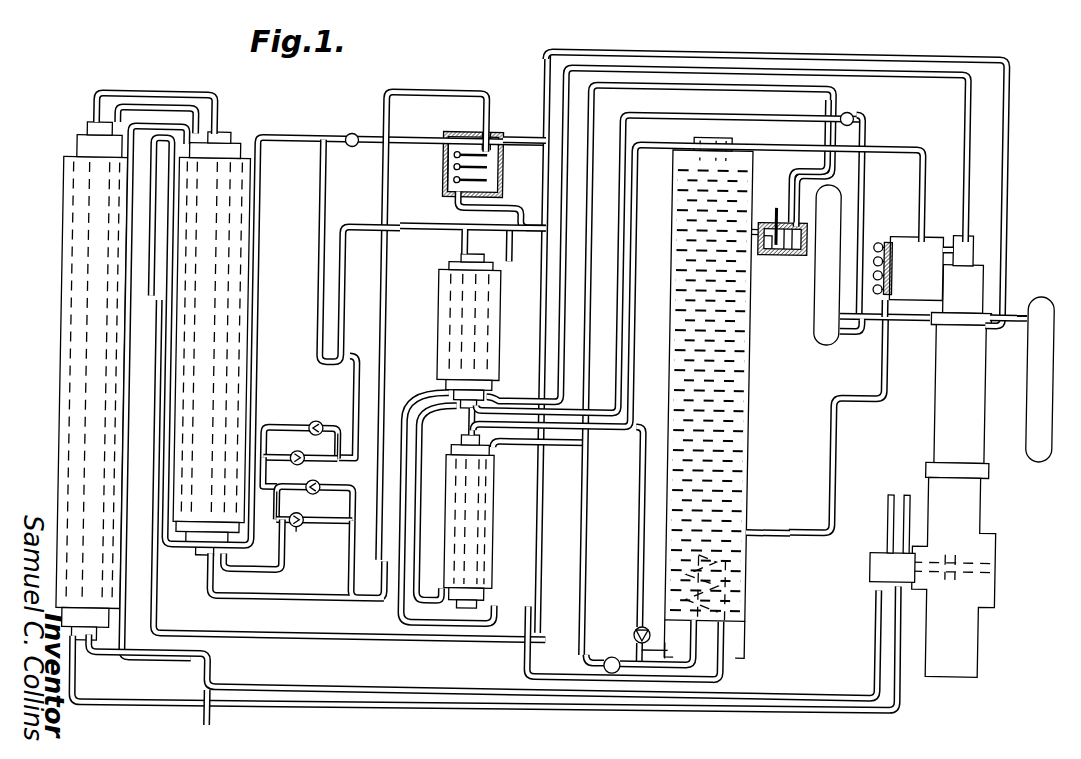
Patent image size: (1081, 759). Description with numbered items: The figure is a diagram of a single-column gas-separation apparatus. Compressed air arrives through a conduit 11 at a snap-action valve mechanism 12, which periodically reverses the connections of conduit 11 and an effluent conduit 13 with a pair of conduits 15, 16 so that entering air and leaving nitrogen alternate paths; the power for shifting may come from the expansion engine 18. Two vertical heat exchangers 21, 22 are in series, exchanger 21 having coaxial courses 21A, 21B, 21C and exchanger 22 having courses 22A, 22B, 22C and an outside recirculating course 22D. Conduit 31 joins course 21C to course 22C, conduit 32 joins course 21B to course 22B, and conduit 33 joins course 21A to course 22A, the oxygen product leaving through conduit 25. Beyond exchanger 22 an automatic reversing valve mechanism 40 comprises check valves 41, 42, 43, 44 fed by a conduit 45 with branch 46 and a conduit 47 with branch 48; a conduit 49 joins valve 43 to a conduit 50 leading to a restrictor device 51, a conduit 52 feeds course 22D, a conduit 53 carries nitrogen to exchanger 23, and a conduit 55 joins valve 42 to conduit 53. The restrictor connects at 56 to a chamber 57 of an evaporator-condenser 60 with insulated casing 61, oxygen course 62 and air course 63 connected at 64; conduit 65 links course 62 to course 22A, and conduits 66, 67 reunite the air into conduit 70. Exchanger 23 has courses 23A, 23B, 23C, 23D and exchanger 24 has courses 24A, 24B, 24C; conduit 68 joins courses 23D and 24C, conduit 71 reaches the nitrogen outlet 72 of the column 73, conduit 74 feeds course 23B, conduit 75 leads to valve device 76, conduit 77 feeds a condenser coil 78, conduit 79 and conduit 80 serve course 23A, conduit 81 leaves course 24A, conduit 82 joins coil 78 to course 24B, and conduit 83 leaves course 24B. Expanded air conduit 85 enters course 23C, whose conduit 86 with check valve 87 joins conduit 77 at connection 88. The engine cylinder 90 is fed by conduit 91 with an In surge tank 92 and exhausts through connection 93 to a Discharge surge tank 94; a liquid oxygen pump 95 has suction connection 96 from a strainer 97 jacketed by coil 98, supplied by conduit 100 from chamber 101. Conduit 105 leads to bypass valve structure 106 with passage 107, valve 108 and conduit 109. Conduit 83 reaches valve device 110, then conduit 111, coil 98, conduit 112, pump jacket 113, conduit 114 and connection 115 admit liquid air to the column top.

The conduit 11 is at (886, 508).
The valve mechanism 12 is at (861, 574).
The conduit 13 is at (904, 530).
The conduit 15 is at (875, 627).
The conduit 16 is at (897, 708).
The expansion engine 18 is at (984, 501).
The heat exchanger 21 is at (55, 366).
The course 21A is at (80, 223).
The course 21B is at (75, 253).
The course 21C is at (66, 288).
The heat exchanger 22 is at (252, 330).
The course 22A is at (252, 173).
The course 22B is at (252, 203).
The course 22C is at (252, 233).
The fourth course 22D is at (252, 262).
The heat exchanger 23 is at (431, 324).
The central course 23A is at (500, 278).
The course 23B is at (500, 296).
The course 23C is at (500, 312).
The outer course 23D is at (500, 330).
The heat exchanger 24 is at (494, 472).
The central course 24A is at (480, 490).
The intermediate course 24B is at (482, 518).
The outer course 24C is at (480, 548).
The conduit 25 is at (213, 715).
The conduit 31 is at (134, 124).
The conduit 32 is at (158, 105).
The conduit 33 is at (130, 92).
The automatic reversing valve mechanism 40 is at (309, 525).
The check valve 41 is at (297, 528).
The check valve 42 is at (350, 494).
The check valve 43 is at (313, 480).
The check valve 44 is at (315, 421).
The conduit 45 is at (283, 572).
The branch 46 is at (280, 500).
The conduit 47 is at (266, 470).
The branch 48 is at (293, 453).
The conduit 49 is at (335, 445).
The conduit 50 is at (360, 410).
The restrictor device 51 is at (352, 133).
The conduit 52 is at (300, 137).
The conduit 53 is at (346, 306).
The conduit 55 is at (353, 530).
The connection 56 is at (448, 137).
The chamber 57 is at (480, 135).
The evaporator-condenser 60 is at (508, 183).
The casing 61 is at (503, 162).
The oxygen conducting conduit or course 62 is at (448, 170).
The air conducting conduit or course 63 is at (455, 187).
The connection 64 is at (448, 158).
The conduit 65 is at (440, 90).
The conduit 66 is at (156, 608).
The conduit 67 is at (518, 136).
The conduit 68 is at (421, 448).
The conduit 70 is at (602, 52).
The conduit 71 is at (637, 297).
The nitrogen outlet 72 is at (692, 152).
The single column 73 is at (758, 371).
The conduit 74 is at (515, 242).
The conduit 75 is at (586, 530).
The valve device 76 is at (612, 656).
The conduit 77 is at (685, 672).
The condenser coil 78 is at (735, 590).
The conduit 79 is at (462, 238).
The conduit 80 is at (398, 592).
The conduit 81 is at (584, 342).
The conduit 82 is at (728, 674).
The conduit 83 is at (618, 252).
The expanded air conduit 85 is at (567, 185).
The conduit 86 is at (640, 492).
The check valve 87 is at (635, 627).
The connection 88 is at (668, 650).
The cylinder 90 is at (978, 290).
The conduit 91 is at (1012, 322).
The In surge tank 92 is at (1026, 396).
The discharge connection 93 is at (912, 322).
The Discharge surge tank 94 is at (814, 318).
The liquid oxygen pump 95 is at (973, 237).
The suction connection 96 is at (900, 236).
The strainer 97 is at (890, 304).
The coil 98 is at (885, 280).
The conduit 100 is at (880, 368).
The chamber 101 is at (738, 545).
The conduit 105 is at (800, 255).
The valve structure 106 is at (780, 258).
The passage 107 is at (792, 228).
The valve 108 is at (768, 252).
The conduit 109 is at (776, 212).
The valve device 110 is at (853, 115).
The conduit 111 is at (867, 184).
The conduit 112 is at (895, 262).
The jacket 113 is at (952, 256).
The conduit 114 is at (917, 148).
The connection 115 is at (757, 165).